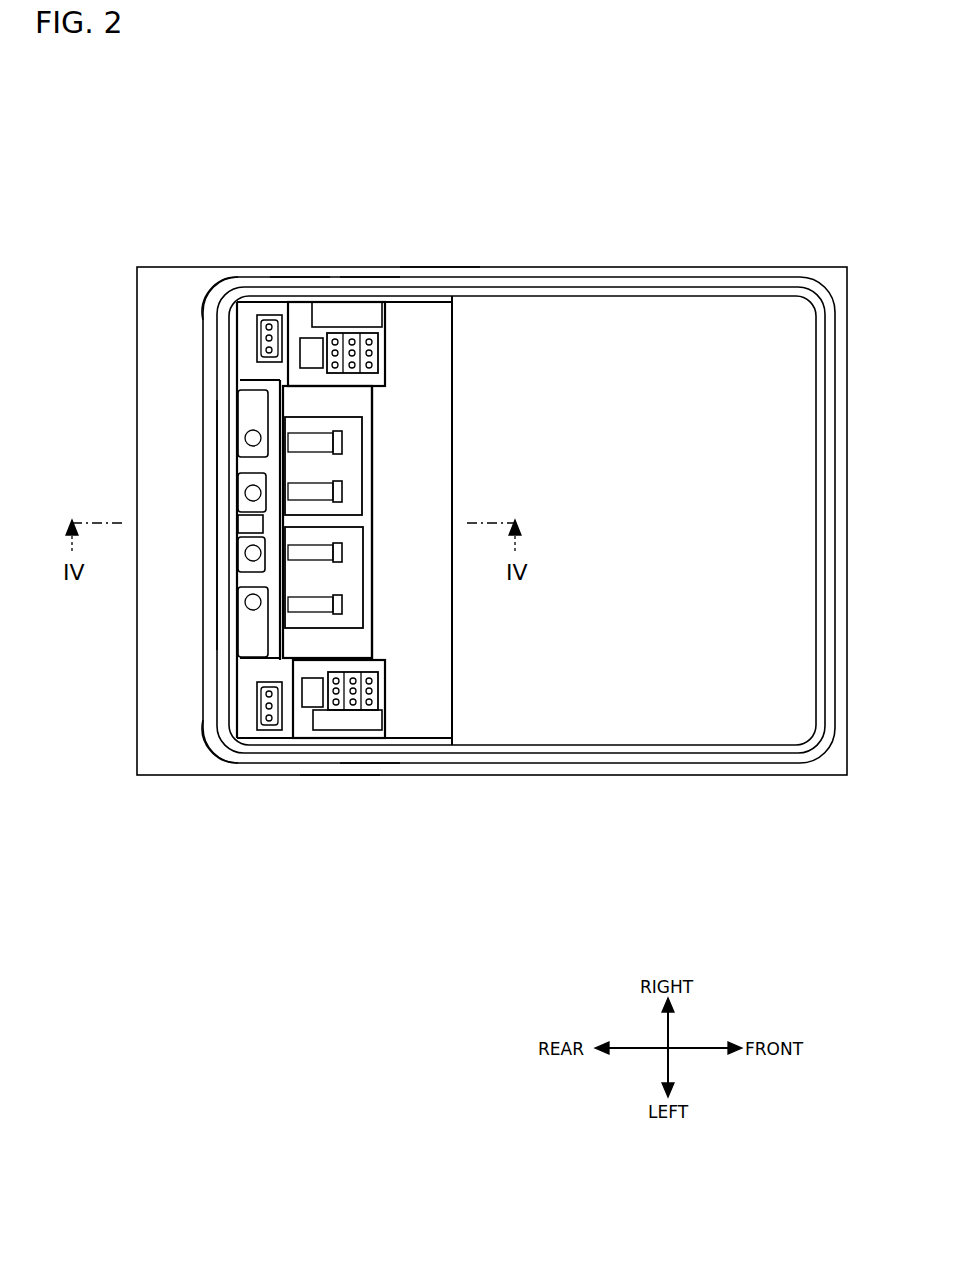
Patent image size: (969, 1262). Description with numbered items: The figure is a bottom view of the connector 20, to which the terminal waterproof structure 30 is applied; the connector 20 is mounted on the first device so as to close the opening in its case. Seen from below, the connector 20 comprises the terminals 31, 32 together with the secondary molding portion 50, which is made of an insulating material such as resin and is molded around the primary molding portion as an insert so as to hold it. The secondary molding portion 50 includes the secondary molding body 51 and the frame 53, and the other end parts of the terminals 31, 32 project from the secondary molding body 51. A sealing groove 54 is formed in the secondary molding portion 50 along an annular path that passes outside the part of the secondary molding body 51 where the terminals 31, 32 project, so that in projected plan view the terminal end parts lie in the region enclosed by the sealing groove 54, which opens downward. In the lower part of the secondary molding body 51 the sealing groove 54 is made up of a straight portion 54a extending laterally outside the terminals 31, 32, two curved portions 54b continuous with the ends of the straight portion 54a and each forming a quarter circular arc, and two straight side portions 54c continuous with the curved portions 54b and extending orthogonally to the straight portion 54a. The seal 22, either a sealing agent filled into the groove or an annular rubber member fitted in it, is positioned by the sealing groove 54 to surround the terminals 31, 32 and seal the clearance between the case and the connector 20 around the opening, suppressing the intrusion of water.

The connector 20 is at (433, 263).
The seal 22 is at (847, 692).
The terminal waterproof structure 30 is at (332, 776).
The terminal 31 is at (343, 440).
The terminal 32 is at (257, 323).
The secondary molding portion 50 is at (298, 276).
The secondary molding body 51 is at (441, 766).
The frame 53 is at (645, 276).
The sealing groove 54 is at (536, 754).
The straight portion 54a is at (226, 608).
The curved portion 54b is at (232, 290).
The straight side portion 54c is at (360, 285).